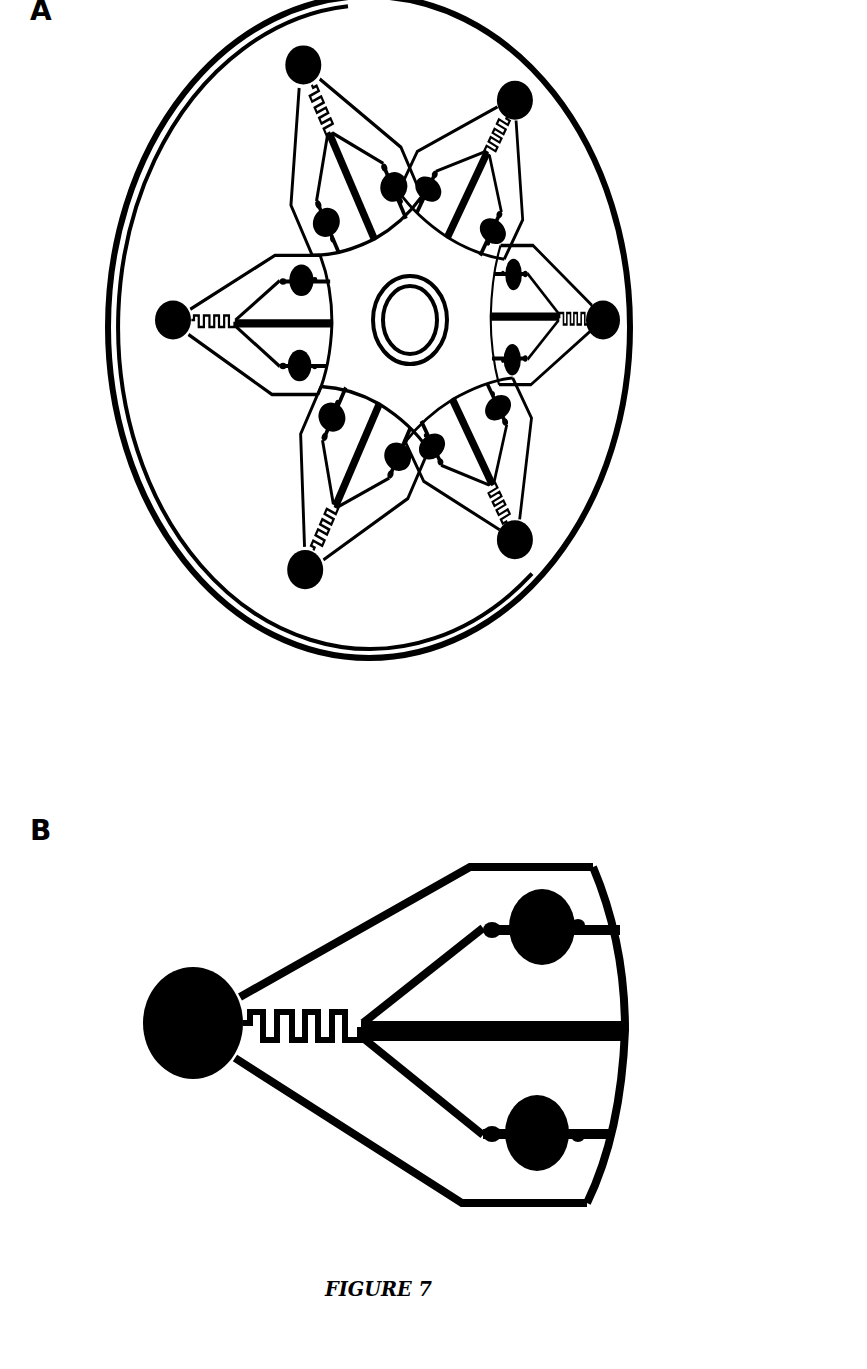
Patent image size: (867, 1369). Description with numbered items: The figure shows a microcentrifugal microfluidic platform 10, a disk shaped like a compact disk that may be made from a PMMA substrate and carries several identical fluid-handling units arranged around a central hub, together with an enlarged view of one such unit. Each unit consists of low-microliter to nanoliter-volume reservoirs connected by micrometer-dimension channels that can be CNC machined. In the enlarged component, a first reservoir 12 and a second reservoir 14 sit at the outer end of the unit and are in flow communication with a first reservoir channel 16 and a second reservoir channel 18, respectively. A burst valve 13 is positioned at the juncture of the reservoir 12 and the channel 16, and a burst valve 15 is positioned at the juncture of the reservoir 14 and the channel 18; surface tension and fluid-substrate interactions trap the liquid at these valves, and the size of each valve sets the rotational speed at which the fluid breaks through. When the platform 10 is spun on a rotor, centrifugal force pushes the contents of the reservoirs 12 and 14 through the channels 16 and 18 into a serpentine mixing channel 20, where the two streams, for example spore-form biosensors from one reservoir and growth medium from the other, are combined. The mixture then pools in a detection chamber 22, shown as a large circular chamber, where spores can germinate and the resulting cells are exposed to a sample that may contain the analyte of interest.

In FIG. 7A, the microfluidic platform 10 is at (655, 186).
In FIG. 7A, the reservoir 12 is at (548, 270).
In FIG. 7B, the reservoir 12 is at (565, 892).
In FIG. 7B, the burst valve 13 is at (507, 912).
In FIG. 7A, the reservoir 14 is at (548, 383).
In FIG. 7B, the reservoir 14 is at (560, 1163).
In FIG. 7B, the burst valve 15 is at (497, 1143).
In FIG. 7A, the reservoir channel 16 is at (283, 277).
In FIG. 7B, the reservoir channel 16 is at (470, 927).
In FIG. 7A, the reservoir channel 18 is at (272, 348).
In FIG. 7B, the reservoir channel 18 is at (427, 1090).
In FIG. 7A, the mixing channel 20 is at (337, 127).
In FIG. 7B, the mixing channel 20 is at (325, 1003).
In FIG. 7A, the detection chamber 22 is at (303, 595).
In FIG. 7B, the detection chamber 22 is at (192, 1082).